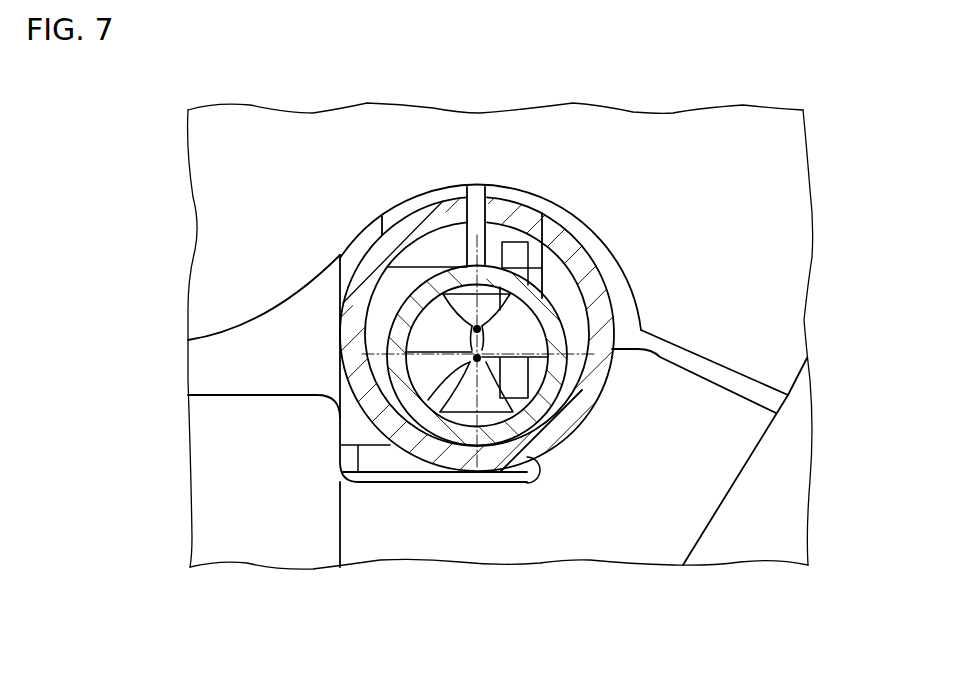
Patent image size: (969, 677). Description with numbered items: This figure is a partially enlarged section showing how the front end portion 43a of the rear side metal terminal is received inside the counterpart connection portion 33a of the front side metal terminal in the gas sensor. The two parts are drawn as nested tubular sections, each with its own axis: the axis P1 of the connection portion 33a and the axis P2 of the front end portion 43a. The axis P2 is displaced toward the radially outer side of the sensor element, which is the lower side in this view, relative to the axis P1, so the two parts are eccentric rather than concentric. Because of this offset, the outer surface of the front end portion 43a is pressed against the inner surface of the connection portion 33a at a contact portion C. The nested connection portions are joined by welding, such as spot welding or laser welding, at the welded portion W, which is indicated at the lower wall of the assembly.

The axis of the first connection portion P1 is at (477, 329).
The axis of the second connection portion P2 is at (477, 358).
The connection portion 33a is at (385, 405).
The welded portion W is at (473, 492).
The contact portion C is at (485, 437).
The front end portion 43a is at (550, 415).